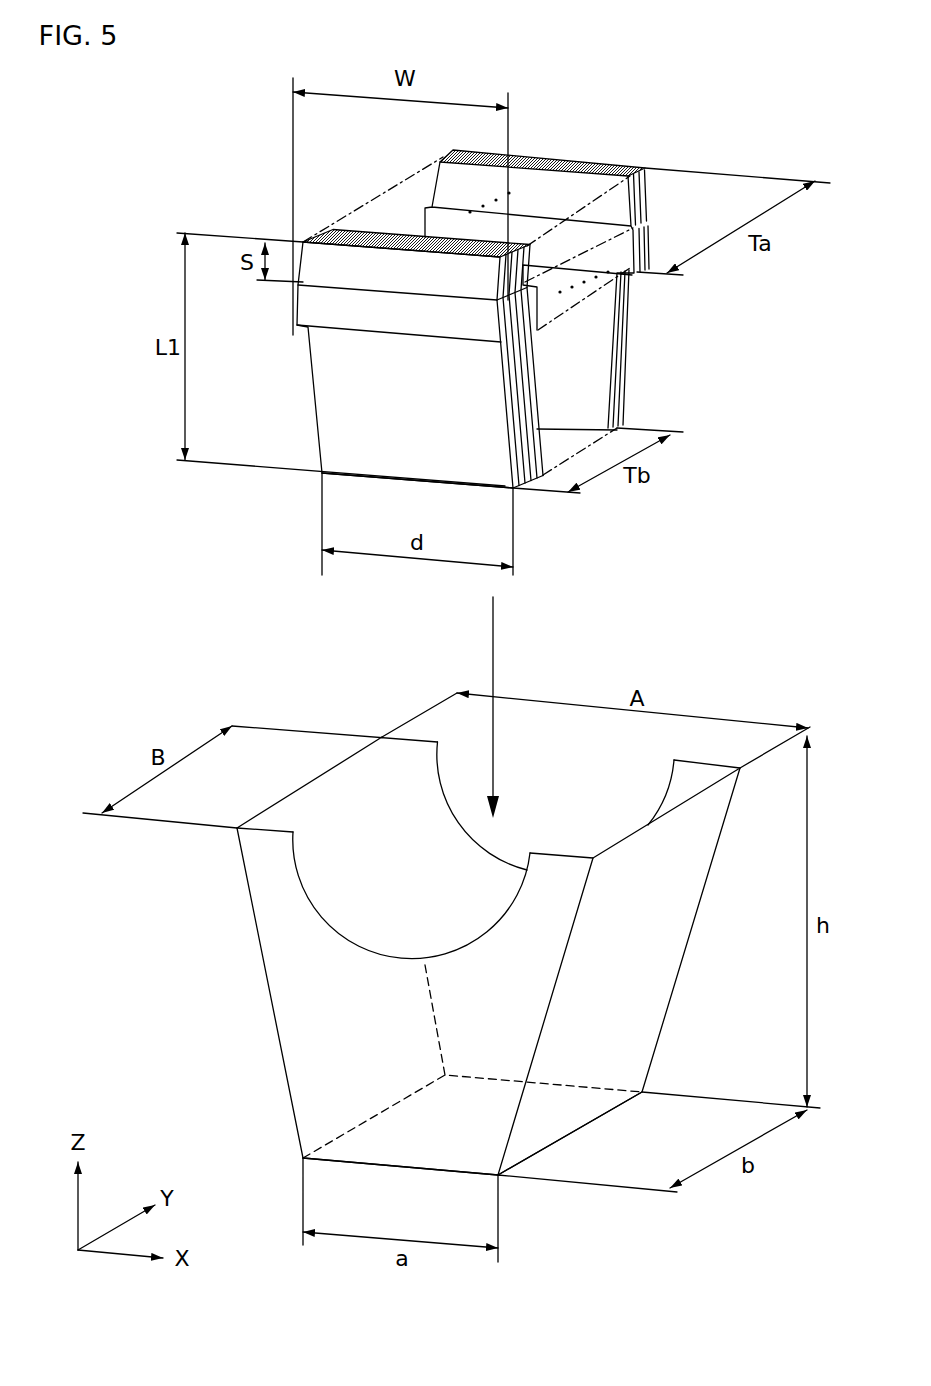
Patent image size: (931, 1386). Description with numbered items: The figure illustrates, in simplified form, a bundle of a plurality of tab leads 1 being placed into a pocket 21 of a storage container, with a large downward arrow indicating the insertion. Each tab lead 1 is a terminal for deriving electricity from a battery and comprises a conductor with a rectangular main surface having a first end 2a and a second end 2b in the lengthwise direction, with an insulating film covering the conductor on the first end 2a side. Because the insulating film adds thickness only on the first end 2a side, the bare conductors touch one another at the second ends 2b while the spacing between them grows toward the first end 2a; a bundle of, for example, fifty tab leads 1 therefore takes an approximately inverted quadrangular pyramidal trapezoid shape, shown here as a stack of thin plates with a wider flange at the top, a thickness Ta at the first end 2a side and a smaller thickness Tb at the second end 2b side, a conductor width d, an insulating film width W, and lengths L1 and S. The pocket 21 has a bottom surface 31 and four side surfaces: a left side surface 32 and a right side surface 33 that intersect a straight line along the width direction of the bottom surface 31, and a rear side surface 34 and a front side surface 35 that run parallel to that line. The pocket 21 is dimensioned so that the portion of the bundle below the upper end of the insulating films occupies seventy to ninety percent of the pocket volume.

The tab lead 1 is at (302, 401).
The first end 2a is at (348, 242).
The second end 2b is at (378, 480).
The pocket 21 is at (334, 701).
The bottom surface 31 is at (530, 1128).
The left side surface 32 is at (320, 805).
The right side surface 33 is at (653, 955).
The rear side surface 34 is at (303, 1038).
The front side surface 35 is at (473, 885).